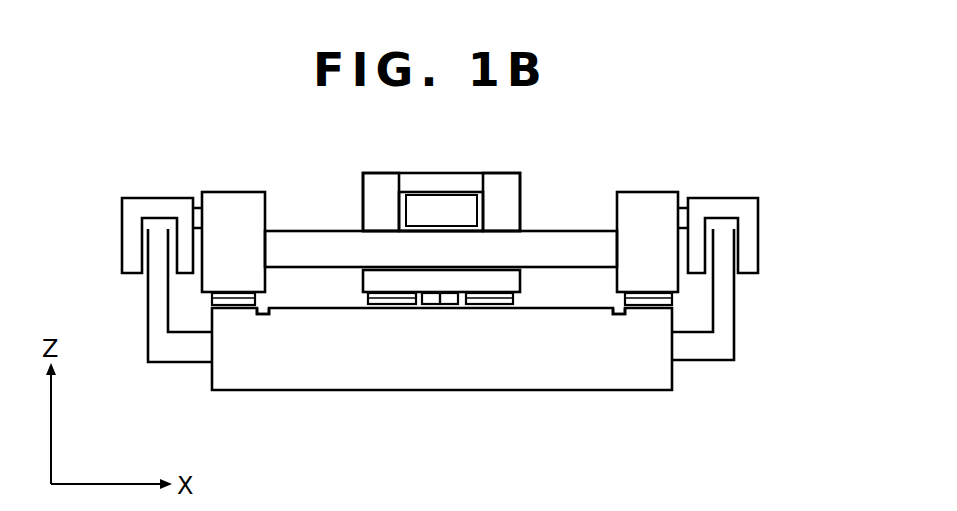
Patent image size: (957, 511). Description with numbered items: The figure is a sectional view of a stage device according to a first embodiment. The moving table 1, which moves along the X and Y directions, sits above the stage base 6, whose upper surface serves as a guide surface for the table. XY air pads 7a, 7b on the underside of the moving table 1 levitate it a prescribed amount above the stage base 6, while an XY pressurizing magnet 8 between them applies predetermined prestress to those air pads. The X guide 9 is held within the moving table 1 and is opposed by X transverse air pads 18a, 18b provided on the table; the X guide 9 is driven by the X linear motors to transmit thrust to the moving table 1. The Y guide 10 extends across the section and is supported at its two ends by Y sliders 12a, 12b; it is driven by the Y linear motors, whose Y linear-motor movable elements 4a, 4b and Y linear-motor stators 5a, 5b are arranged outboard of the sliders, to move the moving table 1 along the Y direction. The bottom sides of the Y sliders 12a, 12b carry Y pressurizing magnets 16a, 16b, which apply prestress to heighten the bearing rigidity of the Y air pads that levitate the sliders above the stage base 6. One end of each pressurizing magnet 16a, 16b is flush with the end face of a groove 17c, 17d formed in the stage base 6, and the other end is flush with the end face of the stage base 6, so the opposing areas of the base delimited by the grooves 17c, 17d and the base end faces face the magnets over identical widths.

The moving table 1 is at (430, 180).
The Y linear-motor movable element 4a is at (158, 210).
The Y linear-motor movable element 4b is at (722, 208).
The Y linear-motor stator 5a is at (158, 270).
The Y linear-motor stator 5b is at (722, 280).
The stage base 6 is at (318, 360).
The XY air pad 7a is at (392, 302).
The XY air pad 7b is at (487, 302).
The XY pressurizing magnet 8 is at (432, 302).
The X guide 9 is at (450, 203).
The Y guide 10 is at (572, 245).
The Y slider 12a is at (234, 207).
The Y slider 12b is at (652, 207).
The Y pressurizing magnet 16a is at (210, 304).
The Y pressurizing magnet 16b is at (672, 303).
The groove 17c is at (262, 316).
The groove 17d is at (619, 316).
The X transverse air pad 18a is at (395, 210).
The X transverse air pad 18b is at (487, 210).